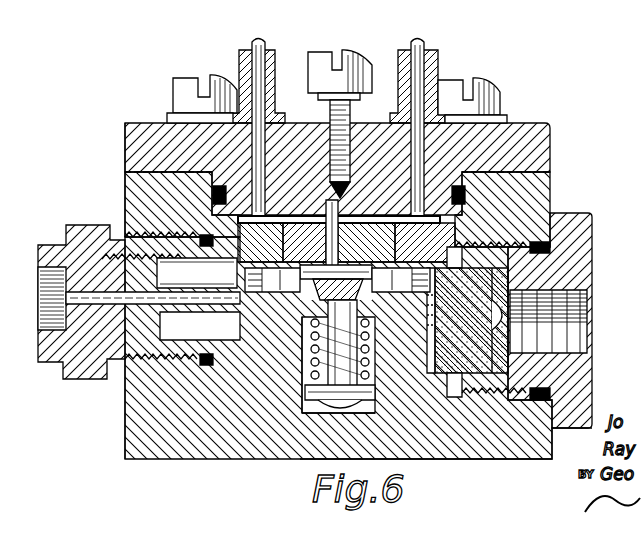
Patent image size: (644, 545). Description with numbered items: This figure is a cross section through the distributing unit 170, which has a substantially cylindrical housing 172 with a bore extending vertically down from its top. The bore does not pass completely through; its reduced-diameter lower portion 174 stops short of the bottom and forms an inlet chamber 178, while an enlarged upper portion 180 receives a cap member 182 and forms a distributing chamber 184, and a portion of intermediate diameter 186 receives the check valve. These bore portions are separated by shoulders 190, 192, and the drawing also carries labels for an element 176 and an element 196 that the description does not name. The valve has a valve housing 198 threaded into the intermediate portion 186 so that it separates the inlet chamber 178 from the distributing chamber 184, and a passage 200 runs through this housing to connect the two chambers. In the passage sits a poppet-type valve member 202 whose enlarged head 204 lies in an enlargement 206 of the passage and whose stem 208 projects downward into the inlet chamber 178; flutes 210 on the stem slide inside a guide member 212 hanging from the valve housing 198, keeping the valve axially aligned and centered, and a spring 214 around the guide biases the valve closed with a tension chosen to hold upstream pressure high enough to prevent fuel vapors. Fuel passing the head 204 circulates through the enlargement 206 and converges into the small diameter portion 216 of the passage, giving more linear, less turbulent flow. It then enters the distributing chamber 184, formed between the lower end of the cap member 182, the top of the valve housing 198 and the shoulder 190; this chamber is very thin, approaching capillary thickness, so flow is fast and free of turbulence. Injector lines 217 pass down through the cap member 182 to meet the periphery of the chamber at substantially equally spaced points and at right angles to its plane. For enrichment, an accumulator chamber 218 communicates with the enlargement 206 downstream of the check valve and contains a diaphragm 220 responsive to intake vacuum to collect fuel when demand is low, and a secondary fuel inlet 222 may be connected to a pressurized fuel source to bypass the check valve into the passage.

The distributing unit 170 is at (586, 212).
The housing 172 is at (518, 437).
The lower portion 174 is at (376, 340).
The chamber wall 176 is at (306, 372).
The inlet chamber 178 is at (313, 413).
The enlarged upper portion 180 is at (212, 215).
The cap member 182 is at (532, 132).
The distributing chamber 184 is at (393, 216).
The portion of intermediate diameter 186 is at (398, 248).
The shoulder 190 is at (455, 220).
The shoulder 192 is at (303, 364).
The plug 196 is at (506, 370).
The valve housing 198 is at (282, 240).
The passage 200 is at (333, 224).
The valve member 202 is at (295, 283).
The enlarged head 204 is at (395, 250).
The enlargement 206 is at (284, 252).
The stem 208 is at (347, 367).
The flutes 210 is at (354, 290).
The guide member 212 is at (310, 405).
The spring 214 is at (376, 400).
The small diameter portion 216 is at (322, 192).
The injector lines 217 is at (250, 42).
The accumulator chamber 218 is at (242, 330).
The diaphragm 220 is at (235, 274).
The secondary fuel inlet 222 is at (588, 292).